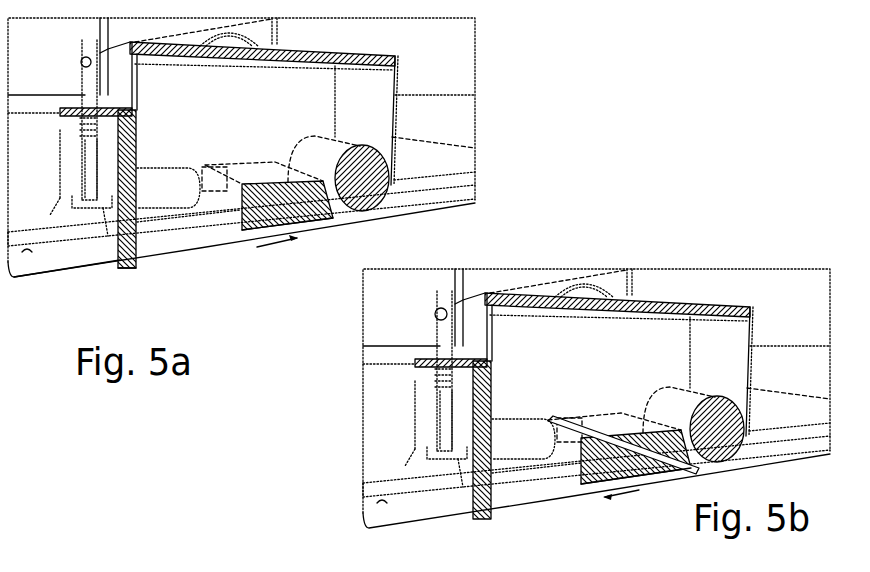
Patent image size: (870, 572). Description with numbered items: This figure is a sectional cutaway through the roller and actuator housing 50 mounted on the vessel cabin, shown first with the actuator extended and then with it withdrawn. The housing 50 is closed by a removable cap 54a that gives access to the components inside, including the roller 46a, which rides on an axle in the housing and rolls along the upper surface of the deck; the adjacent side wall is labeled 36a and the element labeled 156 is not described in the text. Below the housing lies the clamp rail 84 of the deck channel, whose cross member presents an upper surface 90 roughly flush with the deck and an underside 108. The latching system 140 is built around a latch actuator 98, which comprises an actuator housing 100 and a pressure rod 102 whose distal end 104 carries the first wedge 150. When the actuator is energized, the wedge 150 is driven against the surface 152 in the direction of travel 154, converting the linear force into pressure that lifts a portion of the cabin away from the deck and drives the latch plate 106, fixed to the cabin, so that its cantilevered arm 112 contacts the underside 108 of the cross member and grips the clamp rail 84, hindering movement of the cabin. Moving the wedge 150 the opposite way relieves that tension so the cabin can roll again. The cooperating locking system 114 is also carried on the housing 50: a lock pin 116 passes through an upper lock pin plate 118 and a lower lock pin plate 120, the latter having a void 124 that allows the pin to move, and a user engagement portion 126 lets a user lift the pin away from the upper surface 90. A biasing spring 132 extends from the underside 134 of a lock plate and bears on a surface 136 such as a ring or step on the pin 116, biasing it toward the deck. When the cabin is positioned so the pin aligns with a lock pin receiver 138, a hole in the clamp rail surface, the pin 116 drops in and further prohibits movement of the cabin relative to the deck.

In FIG. 5A, the side wall 36a is at (388, 197).
In FIG. 5B, the side wall 36a is at (785, 390).
In FIG. 5A, the roller 46a is at (353, 143).
In FIG. 5A, the housing 50 is at (397, 75).
In FIG. 5B, the housing 50 is at (628, 344).
In FIG. 5A, the removable cap 54a is at (347, 52).
In FIG. 5B, the removable cap 54a is at (617, 295).
In FIG. 5A, the clamp rail 84 is at (42, 240).
In FIG. 5B, the clamp rail 84 is at (348, 505).
In FIG. 5A, the upper surface 90 is at (50, 215).
In FIG. 5B, the upper surface 90 is at (392, 461).
In FIG. 5A, the latch actuator 98 is at (167, 213).
In FIG. 5B, the latch actuator 98 is at (523, 424).
In FIG. 5A, the actuator housing 100 is at (187, 212).
In FIG. 5B, the actuator housing 100 is at (536, 499).
In FIG. 5A, the pressure rod 102 is at (217, 167).
In FIG. 5A, the distal end 104 is at (232, 170).
In FIG. 5A, the latch plate 106 is at (137, 255).
In FIG. 5B, the latch plate 106 is at (504, 446).
In FIG. 5A, the underside 108 is at (50, 273).
In FIG. 5A, the cantilevered arm 112 is at (120, 270).
In FIG. 5A, the locking system 114 is at (68, 56).
In FIG. 5B, the locking system 114 is at (391, 332).
In FIG. 5A, the lock pin 116 is at (88, 197).
In FIG. 5B, the lock pin 116 is at (414, 420).
In FIG. 5A, the upper lock pin plate 118 is at (100, 110).
In FIG. 5B, the upper lock pin plate 118 is at (493, 325).
In FIG. 5A, the lower lock pin plate 120 is at (110, 237).
In FIG. 5B, the lower lock pin plate 120 is at (463, 497).
In FIG. 5A, the void 124 is at (93, 243).
In FIG. 5B, the void 124 is at (436, 477).
In FIG. 5A, the user engagement portion 126 is at (85, 65).
In FIG. 5B, the user engagement portion 126 is at (418, 300).
In FIG. 5A, the biasing spring 132 is at (97, 127).
In FIG. 5B, the biasing spring 132 is at (492, 366).
In FIG. 5A, the underside 134 is at (73, 107).
In FIG. 5B, the underside 134 is at (401, 344).
In FIG. 5A, the surface 136 is at (82, 135).
In FIG. 5B, the surface 136 is at (425, 391).
In FIG. 5A, the lock pin receiver 138 is at (30, 252).
In FIG. 5B, the lock pin receiver 138 is at (353, 490).
In FIG. 5A, the latching system 140 is at (192, 133).
In FIG. 5B, the latching system 140 is at (575, 363).
In FIG. 5A, the first wedge 150 is at (312, 218).
In FIG. 5B, the first wedge 150 is at (636, 498).
In FIG. 5A, the surface 152 is at (332, 203).
In FIG. 5B, the surface 152 is at (636, 421).
In FIG. 5A, the direction of travel 154 is at (277, 252).
In FIG. 5B, the direction of travel 154 is at (621, 509).
In FIG. 5B, the wedge plate 156 is at (665, 433).